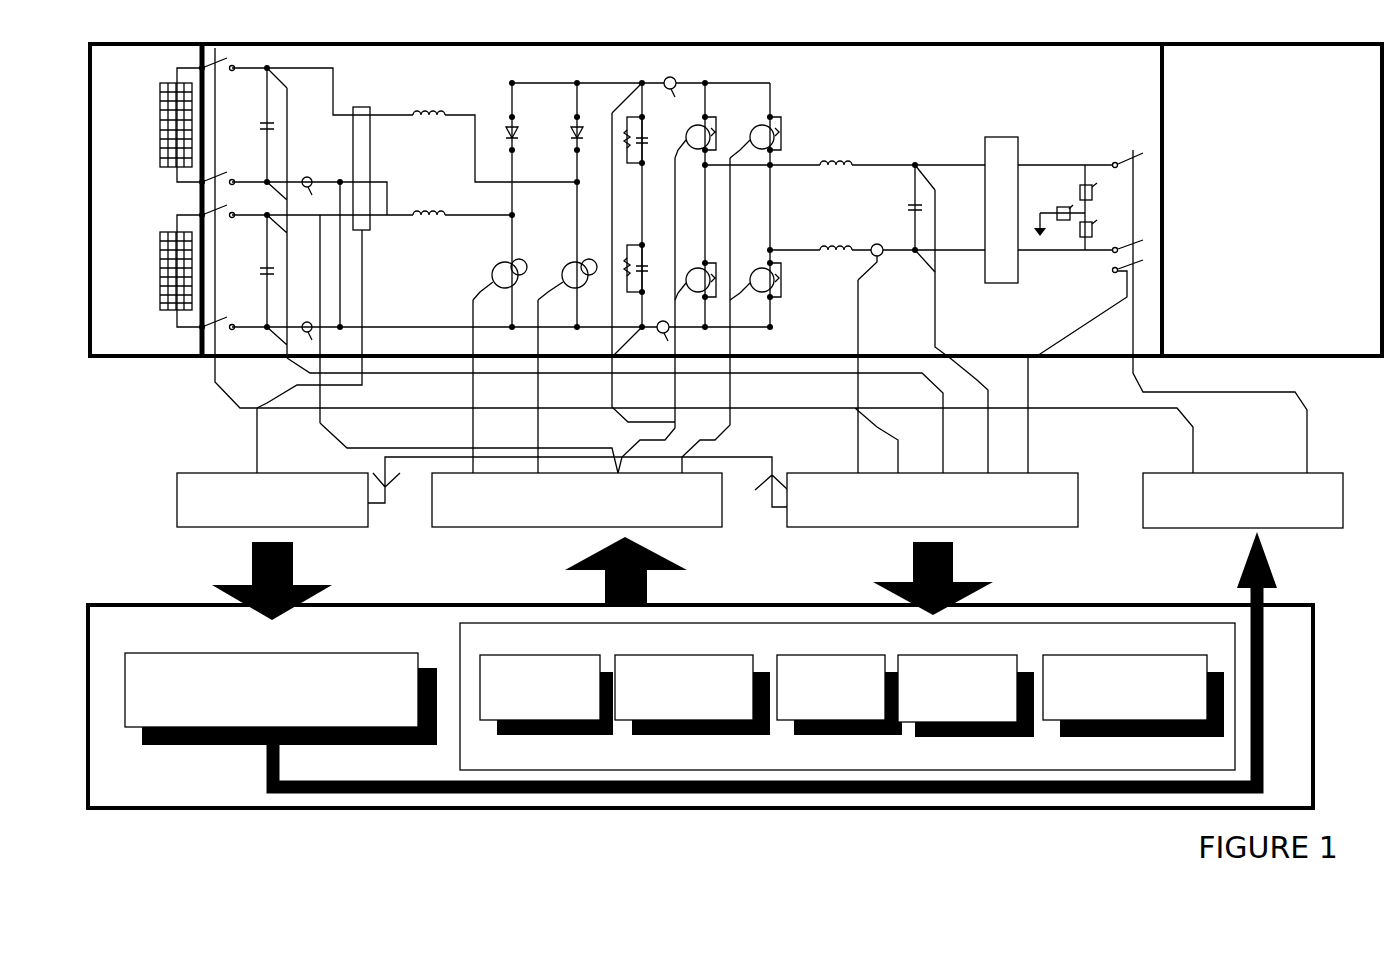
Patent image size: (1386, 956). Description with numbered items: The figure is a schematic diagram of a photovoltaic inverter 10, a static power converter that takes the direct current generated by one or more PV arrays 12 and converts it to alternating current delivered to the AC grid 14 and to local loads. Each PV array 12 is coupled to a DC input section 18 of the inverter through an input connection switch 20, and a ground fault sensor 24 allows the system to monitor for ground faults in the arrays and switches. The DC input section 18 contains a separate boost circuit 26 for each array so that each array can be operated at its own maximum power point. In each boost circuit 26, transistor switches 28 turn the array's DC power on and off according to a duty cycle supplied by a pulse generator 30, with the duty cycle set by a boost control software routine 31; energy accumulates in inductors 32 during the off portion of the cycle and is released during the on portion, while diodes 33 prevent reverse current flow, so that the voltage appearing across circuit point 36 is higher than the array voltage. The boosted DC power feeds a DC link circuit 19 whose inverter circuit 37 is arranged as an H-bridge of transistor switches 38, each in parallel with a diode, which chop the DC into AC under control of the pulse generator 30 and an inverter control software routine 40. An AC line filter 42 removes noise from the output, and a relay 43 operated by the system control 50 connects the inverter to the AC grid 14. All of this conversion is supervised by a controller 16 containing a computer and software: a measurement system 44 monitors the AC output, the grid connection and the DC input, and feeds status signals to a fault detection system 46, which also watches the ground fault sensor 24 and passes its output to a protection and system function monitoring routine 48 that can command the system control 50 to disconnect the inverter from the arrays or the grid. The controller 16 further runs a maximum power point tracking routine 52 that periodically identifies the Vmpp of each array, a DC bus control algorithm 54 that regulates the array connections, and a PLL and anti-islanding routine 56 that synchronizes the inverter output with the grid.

The PV inverter 10 is at (290, 20).
The PV arrays 12 is at (245, 50).
The AC grid 14 is at (1335, 95).
The controller 16 is at (126, 774).
The DC input section 18 is at (300, 103).
The DC link circuit 19 is at (705, 205).
The input connection switch 20 is at (200, 347).
The ground fault sensor 24 is at (371, 150).
The boost circuit 26 is at (599, 205).
The transistor switches 28 is at (490, 262).
The pulse generator 30 is at (460, 530).
The boost control software routine 31 is at (515, 655).
The inductors 32 is at (430, 112).
The diodes 33 is at (574, 133).
The circuit point 36 is at (668, 80).
The inverter circuit 37 is at (759, 224).
The transistor switches 38 is at (772, 120).
The inverter control software routine 40 is at (673, 655).
The AC line filter 42 is at (1000, 137).
The relay 43 is at (1133, 142).
The measurement system 44 is at (1010, 530).
The fault detection system 46 is at (320, 530).
The protection and system function monitoring software routine 48 is at (320, 653).
The system control 50 is at (1153, 530).
The Maximum Power Point Tracking software routine 52 is at (815, 655).
The DC bus control algorithm 54 is at (955, 655).
The PLL and anti-islanding routine 56 is at (1113, 655).